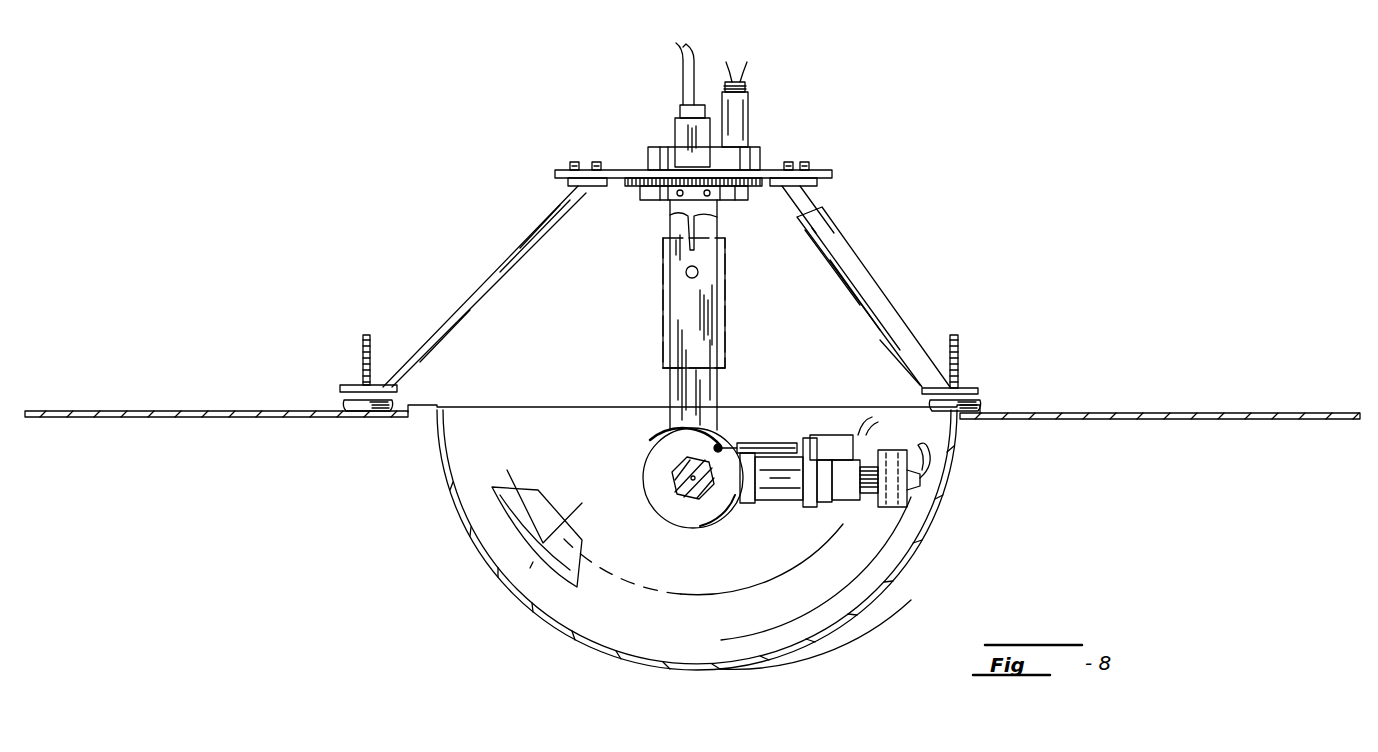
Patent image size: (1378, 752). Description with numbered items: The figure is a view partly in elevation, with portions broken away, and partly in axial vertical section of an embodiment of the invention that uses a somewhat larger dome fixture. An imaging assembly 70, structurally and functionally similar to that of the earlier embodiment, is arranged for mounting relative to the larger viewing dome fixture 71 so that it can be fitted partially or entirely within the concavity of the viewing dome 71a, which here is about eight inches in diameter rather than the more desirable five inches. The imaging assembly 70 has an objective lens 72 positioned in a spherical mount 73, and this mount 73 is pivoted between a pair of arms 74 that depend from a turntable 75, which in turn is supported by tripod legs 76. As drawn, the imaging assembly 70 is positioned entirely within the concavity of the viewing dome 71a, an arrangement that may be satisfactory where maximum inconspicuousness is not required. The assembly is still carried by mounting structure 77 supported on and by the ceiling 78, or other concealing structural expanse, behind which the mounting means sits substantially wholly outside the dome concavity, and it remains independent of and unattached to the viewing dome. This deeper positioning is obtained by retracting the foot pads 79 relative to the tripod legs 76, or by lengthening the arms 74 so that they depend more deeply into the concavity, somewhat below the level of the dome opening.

The imaging assembly 70 is at (808, 516).
The viewing dome fixture 71 is at (420, 405).
The viewing dome 71a is at (810, 637).
The objective lens 72 is at (645, 477).
The spherical mount 73 is at (677, 528).
The arms 74 is at (710, 212).
The turntable 75 is at (610, 167).
The tripod legs 76 is at (500, 268).
The mounting structure 77 is at (832, 138).
The ceiling 78 is at (213, 418).
The foot pads 79 is at (340, 408).